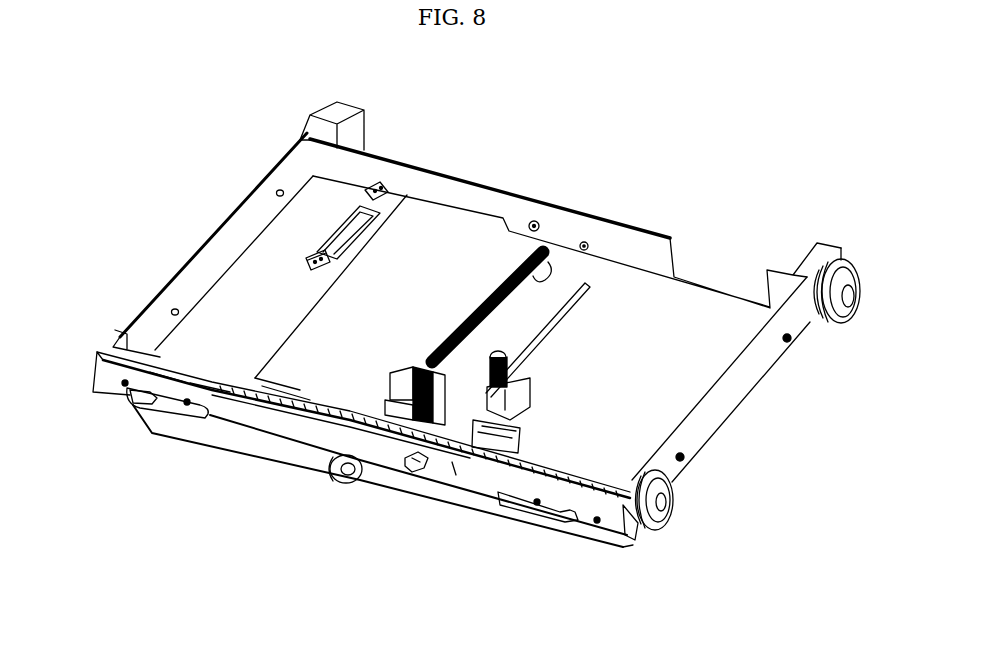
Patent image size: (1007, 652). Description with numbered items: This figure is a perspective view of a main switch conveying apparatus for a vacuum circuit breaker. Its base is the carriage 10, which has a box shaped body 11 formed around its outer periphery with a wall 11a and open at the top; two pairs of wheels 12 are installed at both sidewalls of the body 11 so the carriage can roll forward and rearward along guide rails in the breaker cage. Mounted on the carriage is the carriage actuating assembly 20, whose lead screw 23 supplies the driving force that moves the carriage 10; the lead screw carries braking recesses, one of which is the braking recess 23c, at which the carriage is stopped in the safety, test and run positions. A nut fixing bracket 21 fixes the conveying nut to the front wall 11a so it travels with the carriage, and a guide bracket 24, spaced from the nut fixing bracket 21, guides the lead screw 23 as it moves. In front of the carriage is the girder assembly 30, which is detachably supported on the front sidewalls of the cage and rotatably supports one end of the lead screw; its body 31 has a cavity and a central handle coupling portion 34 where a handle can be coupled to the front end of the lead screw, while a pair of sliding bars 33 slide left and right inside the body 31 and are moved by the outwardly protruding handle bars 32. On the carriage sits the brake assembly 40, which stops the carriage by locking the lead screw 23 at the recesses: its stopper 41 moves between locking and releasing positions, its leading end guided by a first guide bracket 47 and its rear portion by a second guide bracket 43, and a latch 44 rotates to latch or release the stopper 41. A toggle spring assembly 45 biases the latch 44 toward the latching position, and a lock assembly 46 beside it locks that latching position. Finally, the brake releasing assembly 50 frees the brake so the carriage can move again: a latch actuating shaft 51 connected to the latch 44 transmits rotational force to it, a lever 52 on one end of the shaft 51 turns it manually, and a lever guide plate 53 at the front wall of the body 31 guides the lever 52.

The carriage 10 is at (217, 200).
The body 11 is at (180, 273).
The wall 11a is at (397, 170).
The wheels 12 is at (850, 316).
The carriage actuating assembly 20 is at (457, 316).
The nut fixing bracket 21 is at (367, 403).
The lead screw 23 is at (477, 293).
The braking recess 23c is at (552, 263).
The guide bracket 24 is at (403, 377).
The girder assembly 30 is at (213, 430).
The body 31 is at (260, 437).
The handle bars 32 is at (137, 417).
The sliding bars 33 is at (95, 363).
The handle coupling portion 34 is at (328, 482).
The brake assembly 40 is at (470, 369).
The stopper 41 is at (415, 363).
The second guide bracket 43 is at (432, 362).
The latch 44 is at (457, 417).
The toggle spring assembly 45 is at (523, 418).
The lock assembly 46 is at (527, 377).
The first guide bracket 47 is at (390, 390).
The brake releasing assembly 50 is at (380, 539).
The latch actuating shaft 51 is at (592, 289).
The lever 52 is at (418, 483).
The lever guide plate 53 is at (383, 455).